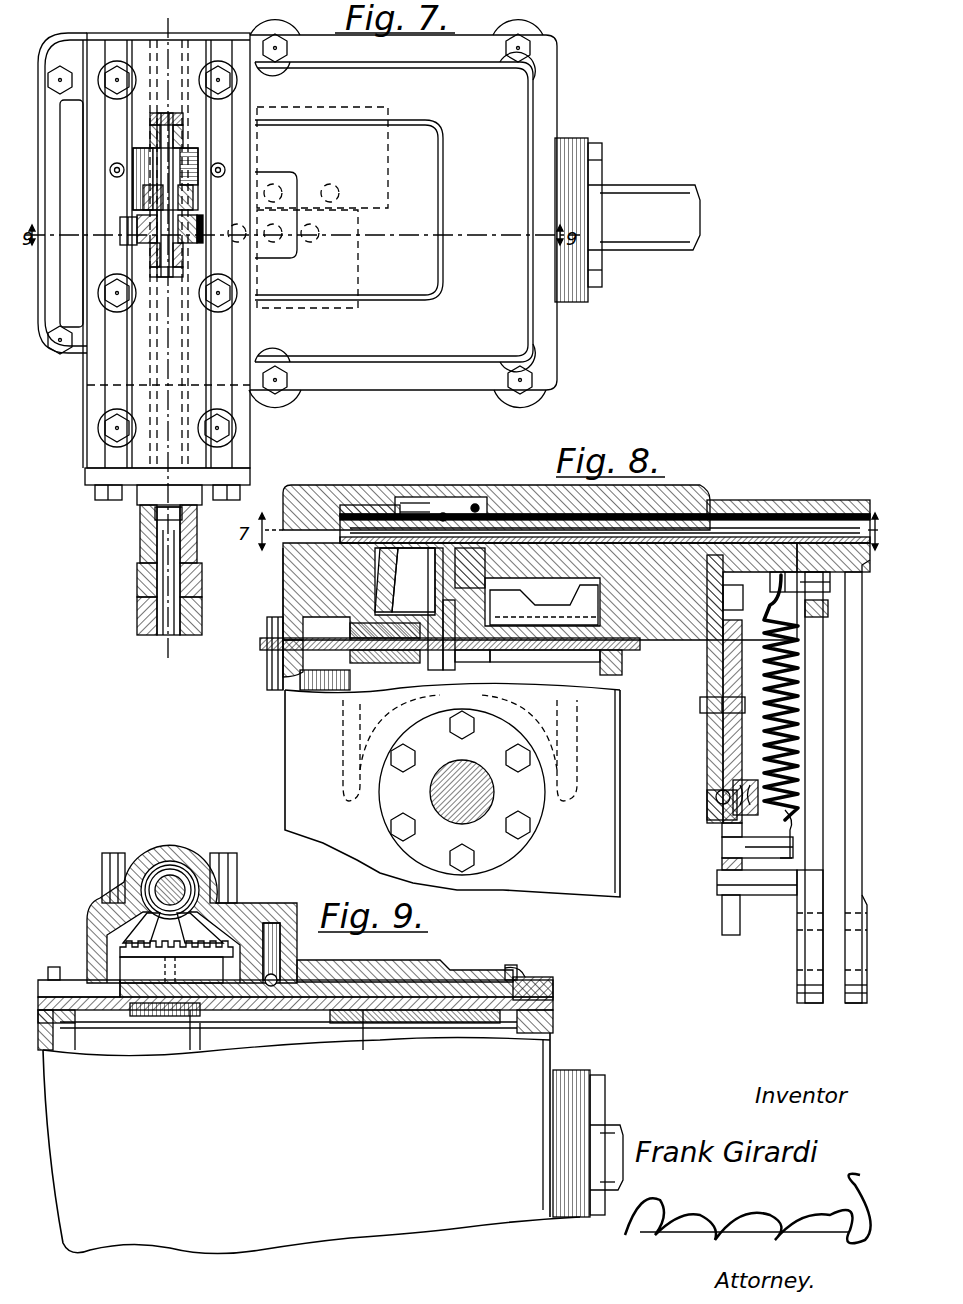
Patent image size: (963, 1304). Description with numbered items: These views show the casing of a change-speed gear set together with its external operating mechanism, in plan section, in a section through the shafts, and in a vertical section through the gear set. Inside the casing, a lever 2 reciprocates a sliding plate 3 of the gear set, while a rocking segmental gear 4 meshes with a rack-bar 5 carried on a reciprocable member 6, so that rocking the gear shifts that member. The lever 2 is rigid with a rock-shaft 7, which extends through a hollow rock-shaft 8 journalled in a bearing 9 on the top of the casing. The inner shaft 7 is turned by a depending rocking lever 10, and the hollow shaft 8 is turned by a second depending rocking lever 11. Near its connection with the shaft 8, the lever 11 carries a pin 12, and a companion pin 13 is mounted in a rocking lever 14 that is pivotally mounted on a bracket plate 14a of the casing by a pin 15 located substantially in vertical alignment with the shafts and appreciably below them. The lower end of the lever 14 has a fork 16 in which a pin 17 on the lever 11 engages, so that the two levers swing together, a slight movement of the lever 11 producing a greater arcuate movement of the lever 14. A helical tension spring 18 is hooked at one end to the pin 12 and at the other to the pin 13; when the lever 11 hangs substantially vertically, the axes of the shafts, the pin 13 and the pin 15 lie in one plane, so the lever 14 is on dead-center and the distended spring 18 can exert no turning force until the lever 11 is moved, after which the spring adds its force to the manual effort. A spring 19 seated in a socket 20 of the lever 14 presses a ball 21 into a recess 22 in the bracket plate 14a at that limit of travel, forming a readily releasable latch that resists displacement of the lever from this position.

In FIG. 7, the lever 2 is at (140, 200).
In FIG. 8, the lever 2 is at (428, 575).
In FIG. 9, the lever 2 is at (163, 937).
In FIG. 7, the sliding plate 3 is at (272, 106).
In FIG. 8, the sliding plate 3 is at (300, 626).
In FIG. 7, the rocking segmental gear 4 is at (137, 243).
In FIG. 8, the rocking segmental gear 4 is at (490, 550).
In FIG. 9, the rocking segmental gear 4 is at (200, 915).
In FIG. 7, the rack-bar 5 is at (125, 230).
In FIG. 8, the rack-bar 5 is at (444, 609).
In FIG. 9, the rack-bar 5 is at (177, 962).
In FIG. 7, the reciprocable member 6 is at (308, 310).
In FIG. 8, the reciprocable member 6 is at (545, 630).
In FIG. 9, the reciprocable member 6 is at (345, 980).
In FIG. 7, the rock-shaft 7 is at (150, 170).
In FIG. 8, the rock-shaft 7 is at (690, 500).
In FIG. 9, the rock-shaft 7 is at (160, 875).
In FIG. 7, the hollow rock-shaft 8 is at (152, 266).
In FIG. 8, the hollow rock-shaft 8 is at (655, 498).
In FIG. 9, the hollow rock-shaft 8 is at (175, 878).
In FIG. 7, the bearing 9 is at (130, 357).
In FIG. 8, the bearing 9 is at (712, 492).
In FIG. 9, the bearing 9 is at (198, 858).
In FIG. 7, the depending rocking lever 10 is at (183, 645).
In FIG. 8, the depending rocking lever 10 is at (850, 975).
In FIG. 7, the depending rocking lever 11 is at (198, 592).
In FIG. 8, the depending rocking lever 11 is at (798, 960).
In FIG. 8, the pin 12 is at (772, 580).
In FIG. 8, the companion pin 13 is at (757, 834).
In FIG. 8, the rocking lever 14 is at (722, 832).
In FIG. 7, the bracket plate 14a is at (90, 480).
In FIG. 8, the bracket plate 14a is at (708, 676).
In FIG. 8, the pin 15 is at (705, 706).
In FIG. 8, the fork 16 is at (724, 910).
In FIG. 8, the pin 17 is at (768, 895).
In FIG. 8, the helical tension spring 18 is at (760, 735).
In FIG. 8, the spring 19 is at (735, 840).
In FIG. 8, the socket 20 is at (715, 775).
In FIG. 8, the ball 21 is at (712, 808).
In FIG. 8, the recess 22 is at (712, 798).